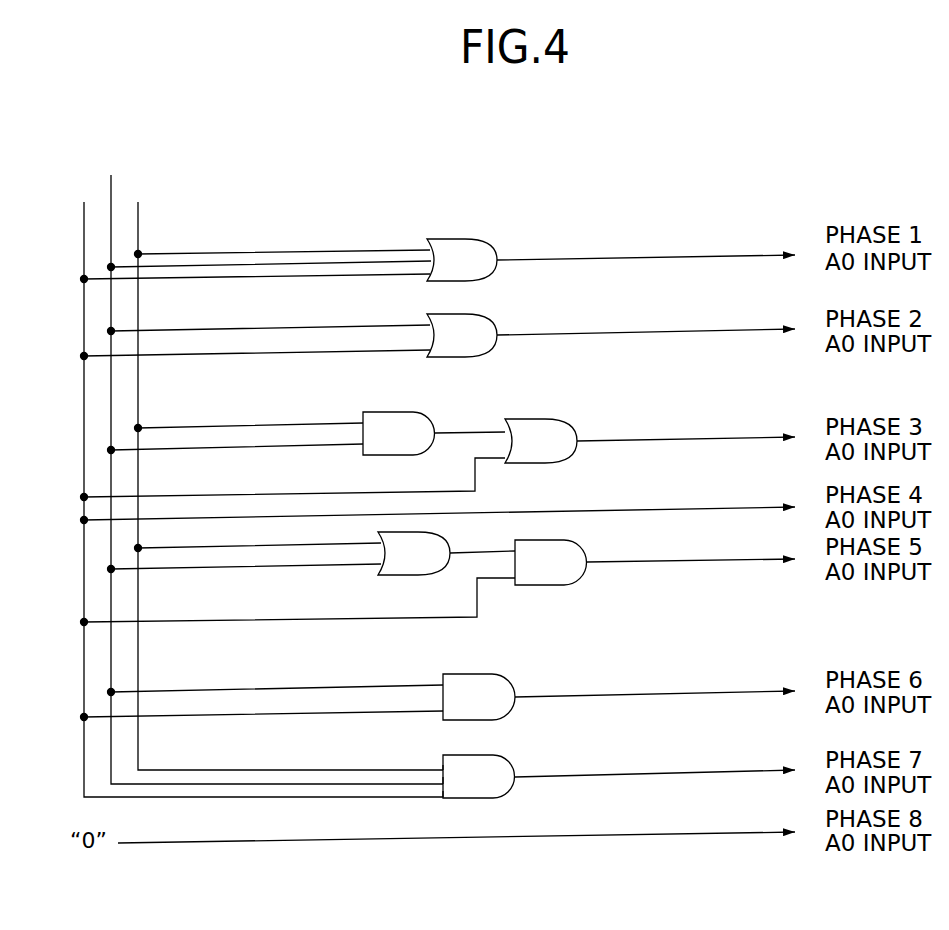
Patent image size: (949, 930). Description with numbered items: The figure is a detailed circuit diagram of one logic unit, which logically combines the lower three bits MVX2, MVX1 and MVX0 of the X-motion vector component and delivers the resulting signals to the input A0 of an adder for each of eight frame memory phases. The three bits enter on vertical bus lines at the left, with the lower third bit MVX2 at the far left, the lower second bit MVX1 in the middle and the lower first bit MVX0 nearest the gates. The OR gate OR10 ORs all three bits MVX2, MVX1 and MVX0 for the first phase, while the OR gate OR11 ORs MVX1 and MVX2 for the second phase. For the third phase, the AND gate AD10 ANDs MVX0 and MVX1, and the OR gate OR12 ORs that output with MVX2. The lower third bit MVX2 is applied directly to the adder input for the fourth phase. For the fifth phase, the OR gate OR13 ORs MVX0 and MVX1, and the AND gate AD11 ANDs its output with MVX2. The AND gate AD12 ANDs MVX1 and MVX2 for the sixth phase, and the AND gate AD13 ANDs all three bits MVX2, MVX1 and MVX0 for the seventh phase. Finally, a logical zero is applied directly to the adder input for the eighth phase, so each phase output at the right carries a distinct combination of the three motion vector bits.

The lower first bit of the X-motion vector component MVX0 is at (290, 471).
The lower second bit of the X-motion vector component MVX1 is at (266, 461).
The lower third bit of the X-motion vector component MVX2 is at (234, 485).
The OR gate OR10 is at (438, 261).
The OR gate OR11 is at (438, 337).
The OR gate OR12 is at (438, 460).
The OR gate OR13 is at (312, 553).
The AND gate AD10 is at (307, 433).
The AND gate AD11 is at (438, 583).
The AND gate AD12 is at (438, 697).
The AND gate AD13 is at (619, 776).